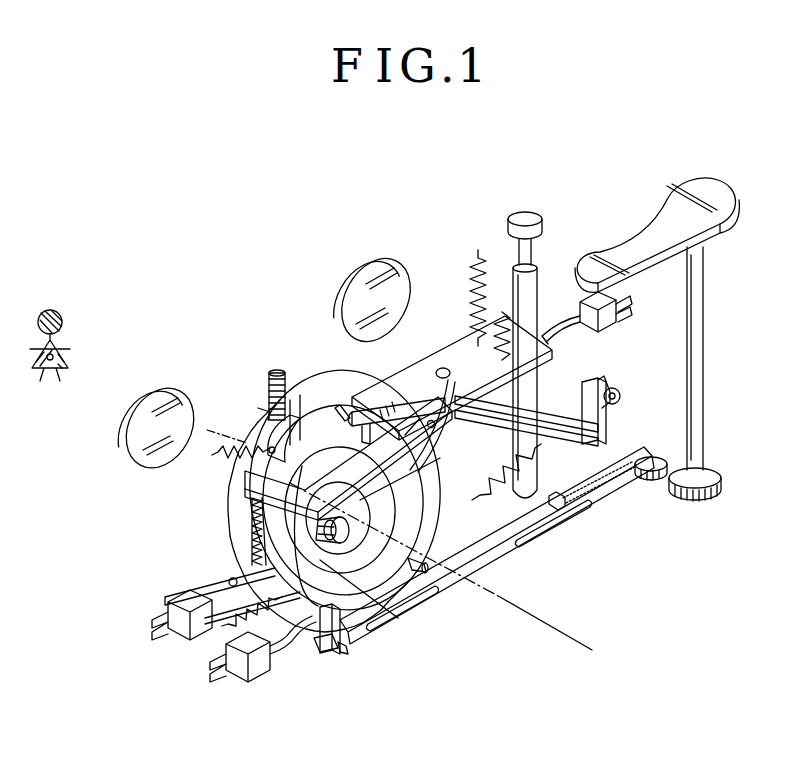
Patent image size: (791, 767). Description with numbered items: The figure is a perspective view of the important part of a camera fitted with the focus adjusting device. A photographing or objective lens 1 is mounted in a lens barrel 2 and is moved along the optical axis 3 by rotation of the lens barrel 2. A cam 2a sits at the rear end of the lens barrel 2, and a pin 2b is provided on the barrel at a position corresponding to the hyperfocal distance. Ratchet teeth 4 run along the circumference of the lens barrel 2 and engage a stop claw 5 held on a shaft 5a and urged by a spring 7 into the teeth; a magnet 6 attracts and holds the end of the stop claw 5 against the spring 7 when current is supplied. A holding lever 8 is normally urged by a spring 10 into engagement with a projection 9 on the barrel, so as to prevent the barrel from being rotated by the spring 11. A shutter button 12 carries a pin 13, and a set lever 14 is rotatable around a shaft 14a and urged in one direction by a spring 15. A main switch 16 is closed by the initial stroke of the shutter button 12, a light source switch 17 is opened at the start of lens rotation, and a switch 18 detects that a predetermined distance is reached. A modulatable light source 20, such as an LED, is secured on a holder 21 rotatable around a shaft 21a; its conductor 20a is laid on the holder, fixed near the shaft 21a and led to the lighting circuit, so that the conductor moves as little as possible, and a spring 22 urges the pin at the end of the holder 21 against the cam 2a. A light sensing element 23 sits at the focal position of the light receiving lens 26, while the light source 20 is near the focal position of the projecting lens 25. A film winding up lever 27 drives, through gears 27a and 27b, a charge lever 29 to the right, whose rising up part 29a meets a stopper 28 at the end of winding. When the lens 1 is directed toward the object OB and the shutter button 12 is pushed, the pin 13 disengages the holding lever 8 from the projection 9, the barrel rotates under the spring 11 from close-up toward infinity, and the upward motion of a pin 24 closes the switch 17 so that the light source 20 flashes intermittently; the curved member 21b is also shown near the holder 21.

The object OB is at (50, 309).
The photographing or objective lens 1 is at (318, 615).
The lens barrel 2 is at (322, 395).
The cam 2a is at (338, 402).
The pin 2b is at (420, 560).
The optical axis 3 is at (538, 616).
The ratchet teeth 4 is at (250, 534).
The stop claw 5 is at (238, 440).
The shaft 5a is at (258, 409).
The magnet 6 is at (275, 372).
The spring 7 is at (222, 453).
The holding lever 8 is at (456, 348).
The projection 9 is at (347, 404).
The spring 10 is at (474, 292).
The spring 11 is at (228, 626).
The shutter button 12 is at (524, 215).
The pin 13 is at (513, 310).
The set lever 14 is at (242, 486).
The shaft 14a is at (438, 428).
The spring 15 is at (498, 310).
The main switch 16 is at (612, 318).
The light source switch 17 is at (255, 682).
The switch 18 is at (186, 640).
The modulatable light source 20 is at (616, 390).
The conductor 20a is at (603, 418).
The holder 21 is at (578, 432).
The shaft 21a is at (440, 366).
The curved rod 21b is at (424, 464).
The spring 22 is at (486, 490).
The photo-electric transducing element 23 is at (342, 548).
The pin 24 is at (300, 640).
The projecting lens 25 is at (379, 270).
The light receiving lens 26 is at (170, 395).
The film winding up lever 27 is at (712, 190).
The gear 27a is at (651, 480).
The gear 27b is at (698, 492).
The stopper 28 is at (324, 654).
The charge lever 29 is at (450, 580).
The rising up part 29a is at (346, 654).